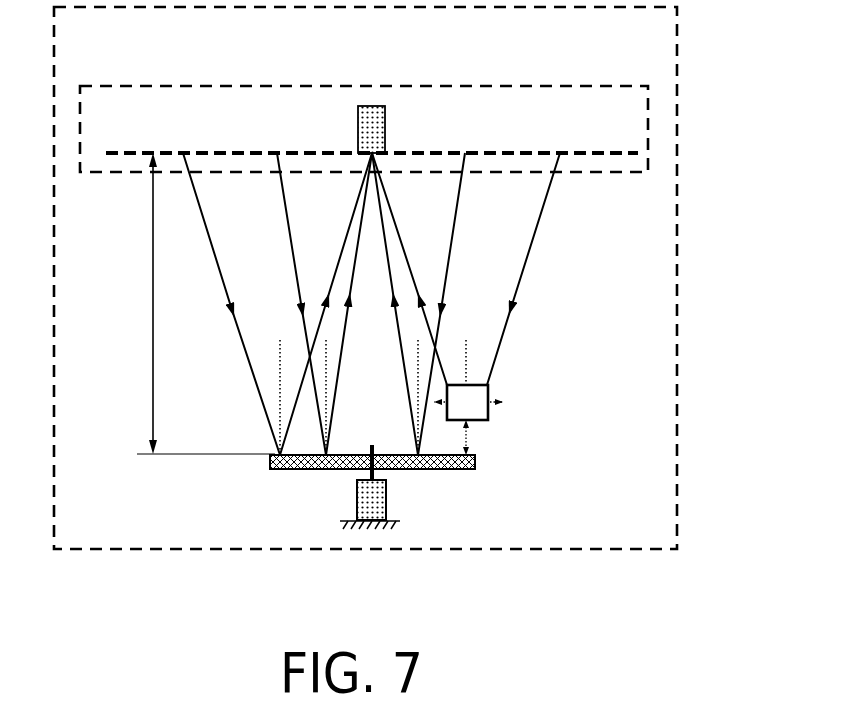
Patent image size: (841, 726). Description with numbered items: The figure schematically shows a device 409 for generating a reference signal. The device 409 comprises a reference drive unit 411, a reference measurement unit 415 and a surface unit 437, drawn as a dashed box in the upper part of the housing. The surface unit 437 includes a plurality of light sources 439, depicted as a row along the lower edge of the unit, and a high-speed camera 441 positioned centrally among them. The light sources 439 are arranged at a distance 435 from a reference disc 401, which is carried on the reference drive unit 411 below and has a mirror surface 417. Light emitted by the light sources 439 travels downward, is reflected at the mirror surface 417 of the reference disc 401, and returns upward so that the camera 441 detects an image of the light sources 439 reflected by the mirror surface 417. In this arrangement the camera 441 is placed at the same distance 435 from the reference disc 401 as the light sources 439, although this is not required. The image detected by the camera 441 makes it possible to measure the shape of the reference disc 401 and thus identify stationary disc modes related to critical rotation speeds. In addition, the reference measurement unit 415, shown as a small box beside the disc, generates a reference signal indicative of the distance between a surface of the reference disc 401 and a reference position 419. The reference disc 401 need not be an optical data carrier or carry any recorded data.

The reference disc 401 is at (281, 470).
The device for generating a reference signal 409 is at (677, 330).
The reference drive unit 411 is at (387, 500).
The reference measurement unit 415 is at (490, 392).
The mirror surface 417 is at (432, 446).
The reference position 419 is at (469, 420).
The distance 435 is at (191, 303).
The surface unit 437 is at (538, 85).
The light sources 439 is at (185, 120).
The high-speed camera 441 is at (372, 105).